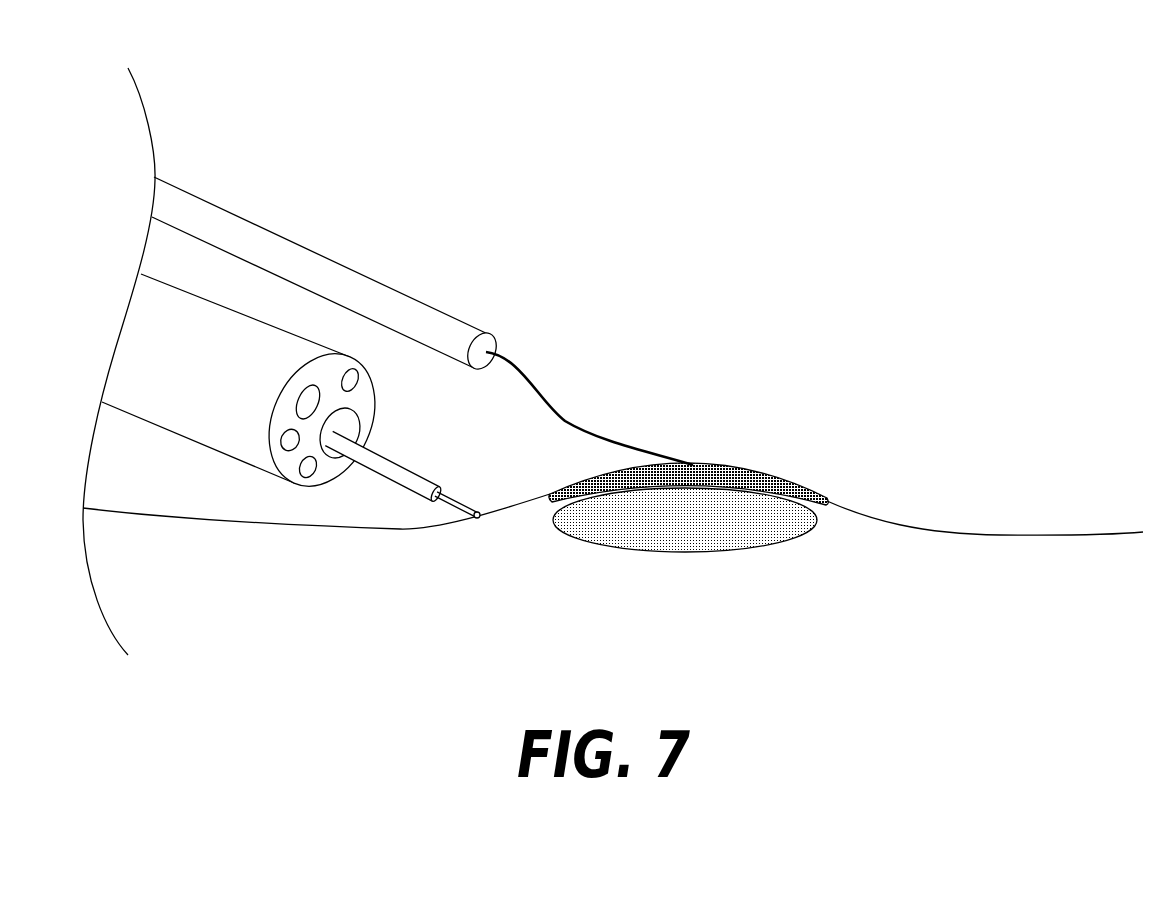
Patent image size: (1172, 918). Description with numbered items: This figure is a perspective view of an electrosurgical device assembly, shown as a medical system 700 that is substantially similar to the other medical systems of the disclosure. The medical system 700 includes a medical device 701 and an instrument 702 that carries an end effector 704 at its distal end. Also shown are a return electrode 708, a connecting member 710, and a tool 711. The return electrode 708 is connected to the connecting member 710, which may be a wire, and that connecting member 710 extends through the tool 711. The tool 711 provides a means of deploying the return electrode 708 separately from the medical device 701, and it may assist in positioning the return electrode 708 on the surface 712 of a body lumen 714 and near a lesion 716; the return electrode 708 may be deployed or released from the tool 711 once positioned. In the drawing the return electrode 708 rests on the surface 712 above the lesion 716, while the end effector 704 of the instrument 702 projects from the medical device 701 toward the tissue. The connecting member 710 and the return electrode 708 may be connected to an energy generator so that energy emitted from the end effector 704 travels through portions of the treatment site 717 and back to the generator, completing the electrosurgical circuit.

The medical system 700 is at (1000, 157).
The medical device 701 is at (203, 416).
The instrument 702 is at (383, 466).
The end effector 704 is at (441, 498).
The return electrode 708 is at (777, 473).
The connecting member 710 is at (575, 420).
The tool 711 is at (356, 280).
The surface 712 is at (1093, 537).
The body lumen 714 is at (1032, 413).
The lesion 716 is at (733, 537).
The treatment site 717 is at (756, 356).